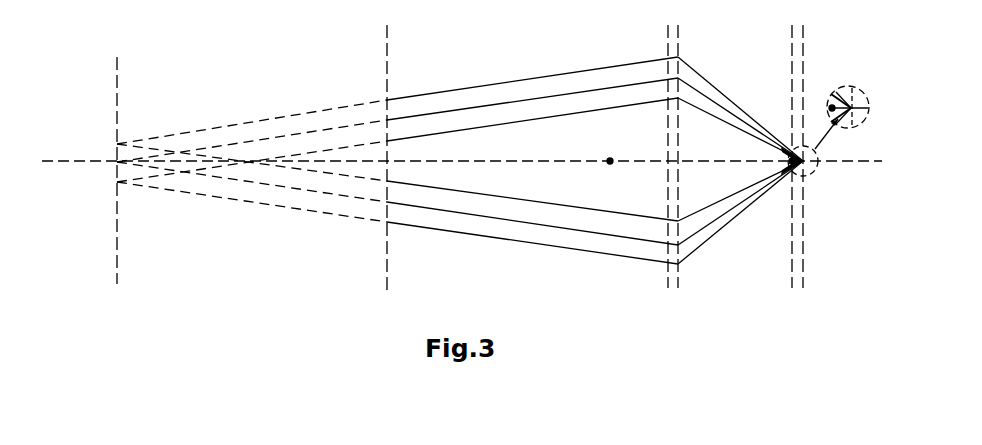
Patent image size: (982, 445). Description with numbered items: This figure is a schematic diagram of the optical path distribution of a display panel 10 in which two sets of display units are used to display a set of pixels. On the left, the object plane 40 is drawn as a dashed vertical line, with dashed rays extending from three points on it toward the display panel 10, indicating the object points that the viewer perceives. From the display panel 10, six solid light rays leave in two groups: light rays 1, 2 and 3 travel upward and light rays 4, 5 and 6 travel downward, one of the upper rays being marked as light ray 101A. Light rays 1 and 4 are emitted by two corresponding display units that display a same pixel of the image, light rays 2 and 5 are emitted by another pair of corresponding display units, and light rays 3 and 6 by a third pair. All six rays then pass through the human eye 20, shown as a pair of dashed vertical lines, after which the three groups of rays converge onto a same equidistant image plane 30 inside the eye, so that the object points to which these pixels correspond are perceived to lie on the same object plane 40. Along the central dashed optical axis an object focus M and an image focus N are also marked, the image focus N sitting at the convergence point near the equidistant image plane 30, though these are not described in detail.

The object plane 40 is at (113, 67).
The display panel 10 is at (383, 60).
The light ray 101A is at (471, 85).
The human eye 20 is at (668, 50).
The equidistant image plane 30 is at (790, 50).
The light ray 1 is at (666, 109).
The light ray 2 is at (595, 119).
The light ray 3 is at (595, 129).
The light ray 4 is at (595, 191).
The light ray 5 is at (595, 203).
The light ray 6 is at (595, 212).
The object focus M is at (609, 163).
The image focus N is at (786, 170).